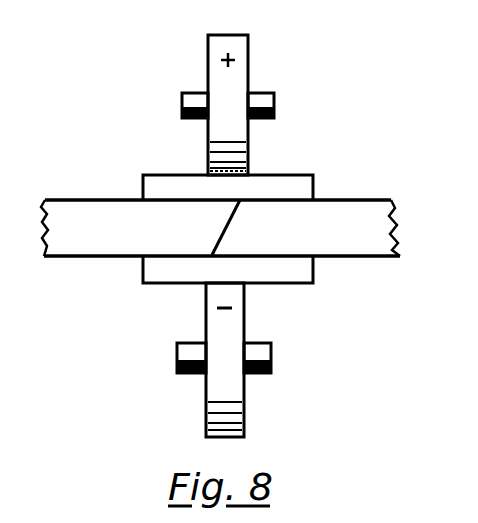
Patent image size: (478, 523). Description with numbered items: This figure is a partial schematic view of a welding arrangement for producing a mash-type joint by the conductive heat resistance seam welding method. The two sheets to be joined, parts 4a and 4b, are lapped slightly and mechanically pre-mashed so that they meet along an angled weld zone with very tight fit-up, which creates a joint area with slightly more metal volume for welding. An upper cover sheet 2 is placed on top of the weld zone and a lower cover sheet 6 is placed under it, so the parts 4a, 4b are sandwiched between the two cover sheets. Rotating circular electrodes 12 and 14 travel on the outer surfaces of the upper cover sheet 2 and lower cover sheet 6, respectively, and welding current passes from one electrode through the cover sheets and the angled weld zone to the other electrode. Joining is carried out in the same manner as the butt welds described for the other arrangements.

The rotating circular electrode 12 is at (237, 87).
The upper cover sheet 2 is at (292, 185).
The lower cover sheet 6 is at (297, 268).
The part to be joined 4a is at (95, 210).
The part to be joined 4b is at (368, 212).
The rotating circular electrode 14 is at (212, 388).